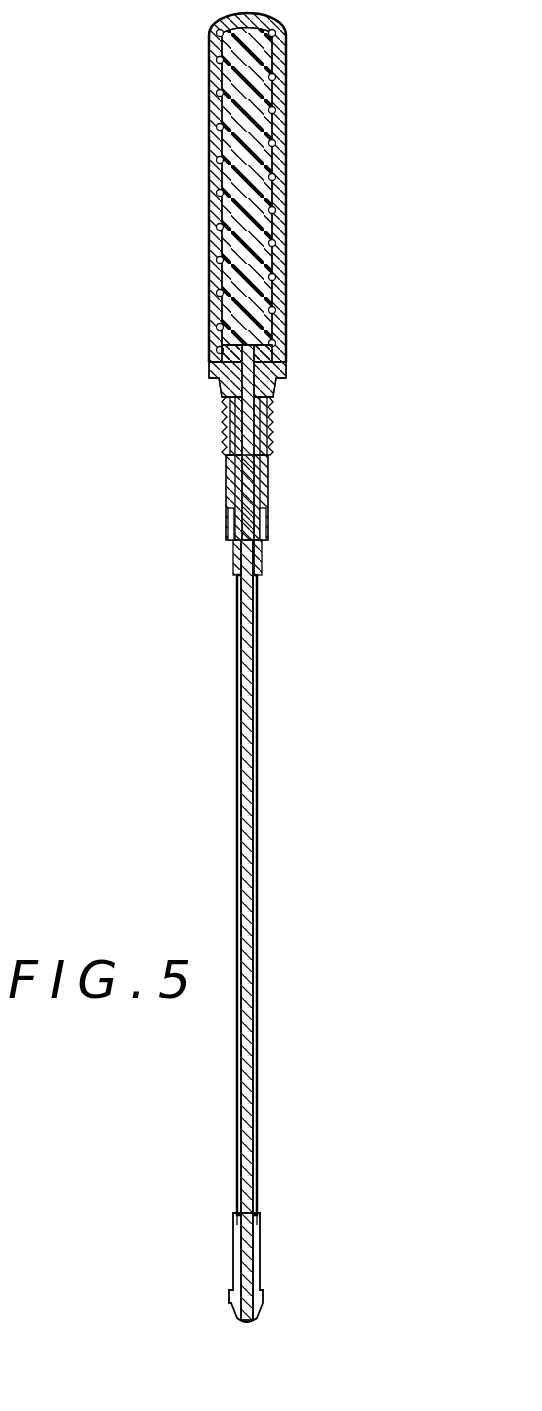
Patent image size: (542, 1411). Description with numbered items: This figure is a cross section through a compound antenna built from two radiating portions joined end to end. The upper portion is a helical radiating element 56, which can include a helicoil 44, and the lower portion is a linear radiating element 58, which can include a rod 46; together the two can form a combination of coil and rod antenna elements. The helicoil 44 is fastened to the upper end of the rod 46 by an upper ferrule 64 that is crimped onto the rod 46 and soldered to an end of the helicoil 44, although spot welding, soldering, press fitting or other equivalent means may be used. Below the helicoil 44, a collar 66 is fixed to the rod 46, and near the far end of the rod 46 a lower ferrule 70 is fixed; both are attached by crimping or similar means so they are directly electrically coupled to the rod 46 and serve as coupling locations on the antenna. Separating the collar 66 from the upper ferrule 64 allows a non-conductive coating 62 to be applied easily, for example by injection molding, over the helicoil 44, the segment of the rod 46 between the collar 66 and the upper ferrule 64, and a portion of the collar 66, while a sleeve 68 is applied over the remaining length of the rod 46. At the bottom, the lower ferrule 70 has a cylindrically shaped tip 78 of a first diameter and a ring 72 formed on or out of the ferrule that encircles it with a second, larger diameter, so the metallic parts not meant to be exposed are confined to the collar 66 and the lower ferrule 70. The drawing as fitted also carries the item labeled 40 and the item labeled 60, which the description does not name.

The threaded fitting 40 is at (280, 386).
The helicoil 44 is at (284, 37).
The rod 46 is at (246, 741).
The helical radiating element 56 is at (236, 187).
The linear radiating element 58 is at (233, 930).
The handle core 60 is at (248, 97).
The coating 62 is at (283, 154).
The upper ferrule 64 is at (262, 351).
The collar 66 is at (262, 544).
The sleeve 68 is at (258, 831).
The lower ferrule 70 is at (225, 1280).
The ring 72 is at (262, 1300).
The tip 78 is at (256, 1313).